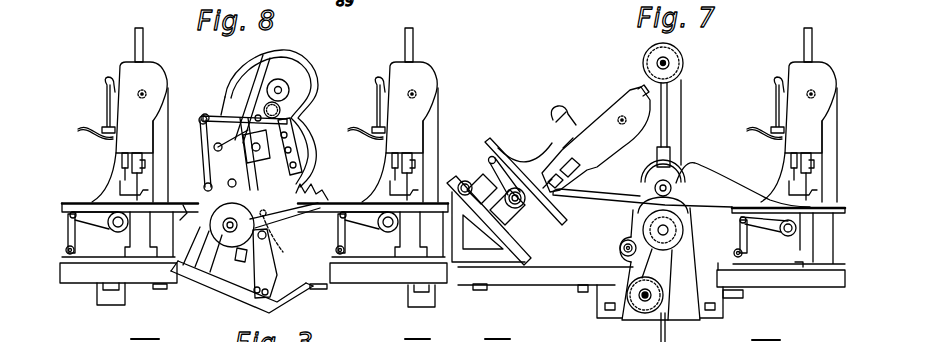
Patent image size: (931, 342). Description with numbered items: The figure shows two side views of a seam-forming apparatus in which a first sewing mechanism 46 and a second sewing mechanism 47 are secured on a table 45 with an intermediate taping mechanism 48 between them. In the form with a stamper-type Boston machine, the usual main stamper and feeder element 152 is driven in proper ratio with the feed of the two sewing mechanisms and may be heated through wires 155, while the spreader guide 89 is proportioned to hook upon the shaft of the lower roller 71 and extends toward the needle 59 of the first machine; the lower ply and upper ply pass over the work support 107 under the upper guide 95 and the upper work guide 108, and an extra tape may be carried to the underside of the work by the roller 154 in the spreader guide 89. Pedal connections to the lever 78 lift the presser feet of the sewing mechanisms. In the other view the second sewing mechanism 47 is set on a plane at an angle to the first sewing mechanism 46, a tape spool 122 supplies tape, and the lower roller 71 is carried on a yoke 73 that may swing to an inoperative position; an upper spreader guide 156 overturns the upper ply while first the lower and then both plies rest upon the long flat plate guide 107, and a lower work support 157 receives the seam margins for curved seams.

In FIG. 7, the table 45 is at (538, 278).
In FIG. 8, the first sewing mechanism 46 is at (445, 107).
In FIG. 7, the first sewing mechanism 46 is at (781, 163).
In FIG. 8, the second sewing mechanism 47 is at (173, 120).
In FIG. 7, the second sewing mechanism 47 is at (593, 100).
In FIG. 7, the taping mechanism 48 is at (617, 223).
In FIG. 8, the needle 59 is at (410, 184).
In FIG. 8, the lower roller 71 is at (242, 280).
In FIG. 7, the yoke 73 is at (660, 335).
In FIG. 8, the lever 78 is at (103, 88).
In FIG. 8, the spreader guide 89 is at (268, 221).
In FIG. 8, the upper guide 95 is at (309, 191).
In FIG. 8, the work support 107 is at (186, 205).
In FIG. 7, the upper work guide 108 is at (607, 194).
In FIG. 7, the spool 122 is at (683, 66).
In FIG. 8, the main stamper and feeder element 152 is at (213, 163).
In FIG. 8, the roller 154 is at (278, 245).
In FIG. 8, the wires 155 is at (232, 81).
In FIG. 7, the upper spreader guide 156 is at (707, 165).
In FIG. 7, the lower work support 157 is at (705, 216).